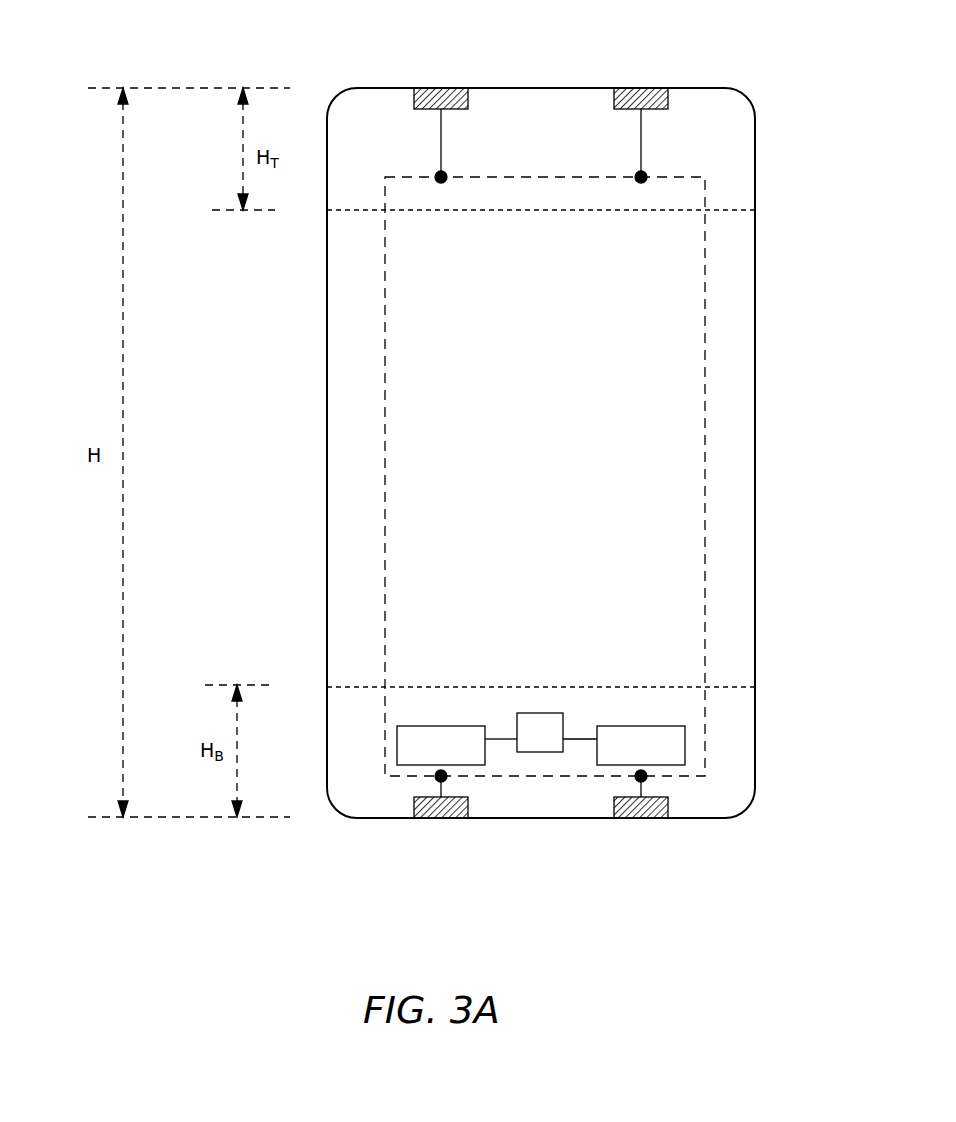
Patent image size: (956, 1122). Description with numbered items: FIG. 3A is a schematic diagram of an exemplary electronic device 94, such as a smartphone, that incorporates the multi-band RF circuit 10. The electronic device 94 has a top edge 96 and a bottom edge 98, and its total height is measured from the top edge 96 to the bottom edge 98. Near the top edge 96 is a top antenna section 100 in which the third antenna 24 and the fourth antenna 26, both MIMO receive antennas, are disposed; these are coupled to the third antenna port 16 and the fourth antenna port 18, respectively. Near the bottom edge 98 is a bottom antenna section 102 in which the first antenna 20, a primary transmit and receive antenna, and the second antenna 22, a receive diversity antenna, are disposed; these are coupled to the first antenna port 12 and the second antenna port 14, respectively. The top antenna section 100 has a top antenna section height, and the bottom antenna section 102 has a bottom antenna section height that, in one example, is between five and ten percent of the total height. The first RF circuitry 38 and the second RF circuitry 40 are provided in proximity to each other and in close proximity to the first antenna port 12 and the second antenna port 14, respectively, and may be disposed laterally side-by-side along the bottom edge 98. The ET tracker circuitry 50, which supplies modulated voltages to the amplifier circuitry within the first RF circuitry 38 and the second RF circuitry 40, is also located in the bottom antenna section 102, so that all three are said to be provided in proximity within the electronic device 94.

The multi-band RF circuit 10 is at (542, 470).
The first antenna port 12 is at (446, 780).
The second antenna port 14 is at (646, 780).
The third antenna port 16 is at (647, 173).
The fourth antenna port 18 is at (447, 173).
The first antenna 20 is at (437, 818).
The second antenna 22 is at (637, 818).
The third antenna 24 is at (641, 88).
The fourth antenna 26 is at (441, 88).
The first RF circuitry 38 is at (452, 757).
The second RF circuitry 40 is at (652, 757).
The ET tracker circuitry 50 is at (552, 745).
The electronic device 94 is at (755, 355).
The top edge 96 is at (534, 88).
The bottom edge 98 is at (533, 818).
The top antenna section 100 is at (236, 138).
The bottom antenna section 102 is at (246, 739).